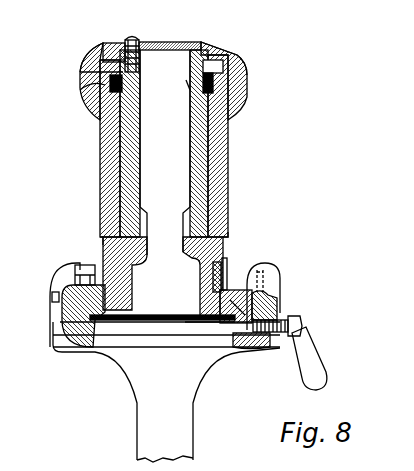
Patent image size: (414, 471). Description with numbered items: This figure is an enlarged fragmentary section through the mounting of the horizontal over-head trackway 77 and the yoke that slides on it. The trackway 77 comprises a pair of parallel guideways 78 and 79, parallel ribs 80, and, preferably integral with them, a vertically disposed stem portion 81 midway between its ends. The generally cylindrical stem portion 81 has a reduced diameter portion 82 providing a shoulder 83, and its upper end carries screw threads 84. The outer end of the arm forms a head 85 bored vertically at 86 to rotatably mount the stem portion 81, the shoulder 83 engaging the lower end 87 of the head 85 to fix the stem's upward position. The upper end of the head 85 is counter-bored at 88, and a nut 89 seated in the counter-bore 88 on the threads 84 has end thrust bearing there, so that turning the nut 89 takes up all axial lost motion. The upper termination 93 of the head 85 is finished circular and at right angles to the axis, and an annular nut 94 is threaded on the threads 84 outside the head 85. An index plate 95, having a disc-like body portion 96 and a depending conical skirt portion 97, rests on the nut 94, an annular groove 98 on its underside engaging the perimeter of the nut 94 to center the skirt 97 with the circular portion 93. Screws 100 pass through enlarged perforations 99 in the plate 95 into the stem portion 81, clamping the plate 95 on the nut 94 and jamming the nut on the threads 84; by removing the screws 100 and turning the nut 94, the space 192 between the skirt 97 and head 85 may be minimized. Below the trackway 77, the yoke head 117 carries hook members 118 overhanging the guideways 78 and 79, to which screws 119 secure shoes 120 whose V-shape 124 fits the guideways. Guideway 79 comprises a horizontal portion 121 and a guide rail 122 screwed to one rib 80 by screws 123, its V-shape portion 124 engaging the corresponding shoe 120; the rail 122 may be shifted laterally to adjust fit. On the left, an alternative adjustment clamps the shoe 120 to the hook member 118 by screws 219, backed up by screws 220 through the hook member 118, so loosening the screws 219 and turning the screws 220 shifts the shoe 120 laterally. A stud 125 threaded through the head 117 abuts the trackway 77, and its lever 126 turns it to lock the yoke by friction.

The trackway 77 is at (160, 338).
The guideway 78 is at (118, 311).
The guideway 79 is at (210, 322).
The ribs 80 is at (140, 266).
The stem portion 81 is at (190, 176).
The reduced diameter portion 82 is at (208, 152).
The shoulder 83 is at (226, 235).
The screw threads 84 is at (189, 86).
The head portion 85 is at (80, 88).
The bore 86 is at (228, 128).
The lower end of head 87 is at (104, 233).
The counter-bore 88 is at (100, 120).
The nut 89 is at (108, 88).
The upper termination of head 93 is at (248, 84).
The annular nut 94 is at (228, 62).
The index plate 95 is at (108, 55).
The disc-like body portion 96 is at (172, 42).
The conical skirt portion 97 is at (88, 58).
The annular groove 98 is at (116, 43).
The enlarged perforations 99 is at (138, 44).
The screws 100 is at (136, 33).
The head 117 is at (232, 350).
The hook members 118 is at (68, 266).
The screws 119 is at (262, 270).
The shoes 120 is at (108, 295).
The horizontal portion 121 is at (235, 308).
The guide rail 122 is at (229, 262).
The screws 123 is at (213, 278).
The V-shape portion 124 is at (225, 297).
The stud 125 is at (266, 340).
The lever 126 is at (312, 348).
The space 192 is at (80, 72).
The screws 219 is at (82, 265).
The screws 220 is at (52, 294).